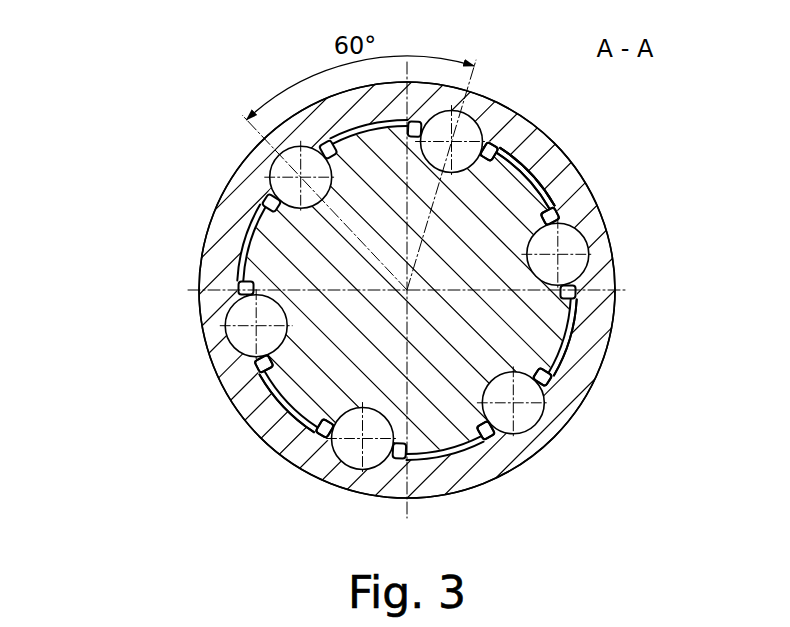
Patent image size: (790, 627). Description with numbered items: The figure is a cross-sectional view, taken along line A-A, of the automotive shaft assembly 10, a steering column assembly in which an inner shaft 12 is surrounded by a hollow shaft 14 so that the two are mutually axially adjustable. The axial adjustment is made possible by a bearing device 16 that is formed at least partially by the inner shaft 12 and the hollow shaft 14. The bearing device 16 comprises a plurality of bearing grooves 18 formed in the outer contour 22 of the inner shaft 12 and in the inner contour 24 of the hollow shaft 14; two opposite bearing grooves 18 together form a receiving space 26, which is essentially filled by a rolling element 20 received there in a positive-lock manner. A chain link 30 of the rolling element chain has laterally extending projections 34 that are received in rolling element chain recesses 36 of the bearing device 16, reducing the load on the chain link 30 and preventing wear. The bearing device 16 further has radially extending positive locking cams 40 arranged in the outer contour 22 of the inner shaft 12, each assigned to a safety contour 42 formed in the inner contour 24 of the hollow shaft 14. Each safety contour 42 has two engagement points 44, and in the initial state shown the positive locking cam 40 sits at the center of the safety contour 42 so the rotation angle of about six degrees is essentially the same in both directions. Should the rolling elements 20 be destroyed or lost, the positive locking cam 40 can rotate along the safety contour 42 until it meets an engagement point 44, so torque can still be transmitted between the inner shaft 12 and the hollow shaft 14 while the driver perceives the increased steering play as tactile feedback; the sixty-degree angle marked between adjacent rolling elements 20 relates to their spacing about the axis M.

The automotive shaft assembly 10 is at (189, 91).
The inner shaft 12 is at (268, 178).
The hollow shaft 14 is at (210, 267).
The bearing device 16 is at (131, 148).
The bearing grooves 18 is at (219, 313).
The rolling elements 20 is at (290, 156).
The outer contour 22 is at (244, 229).
The inner contour 24 is at (244, 247).
The receiving space 26 is at (239, 361).
The chain link 30 is at (549, 379).
The laterally extending projections 34 is at (318, 440).
The rolling element chain recesses 36 is at (323, 446).
The positive locking cams 40 is at (533, 181).
The safety contour 42 is at (512, 172).
The engagement points 44 is at (497, 150).
The center axis M is at (578, 320).